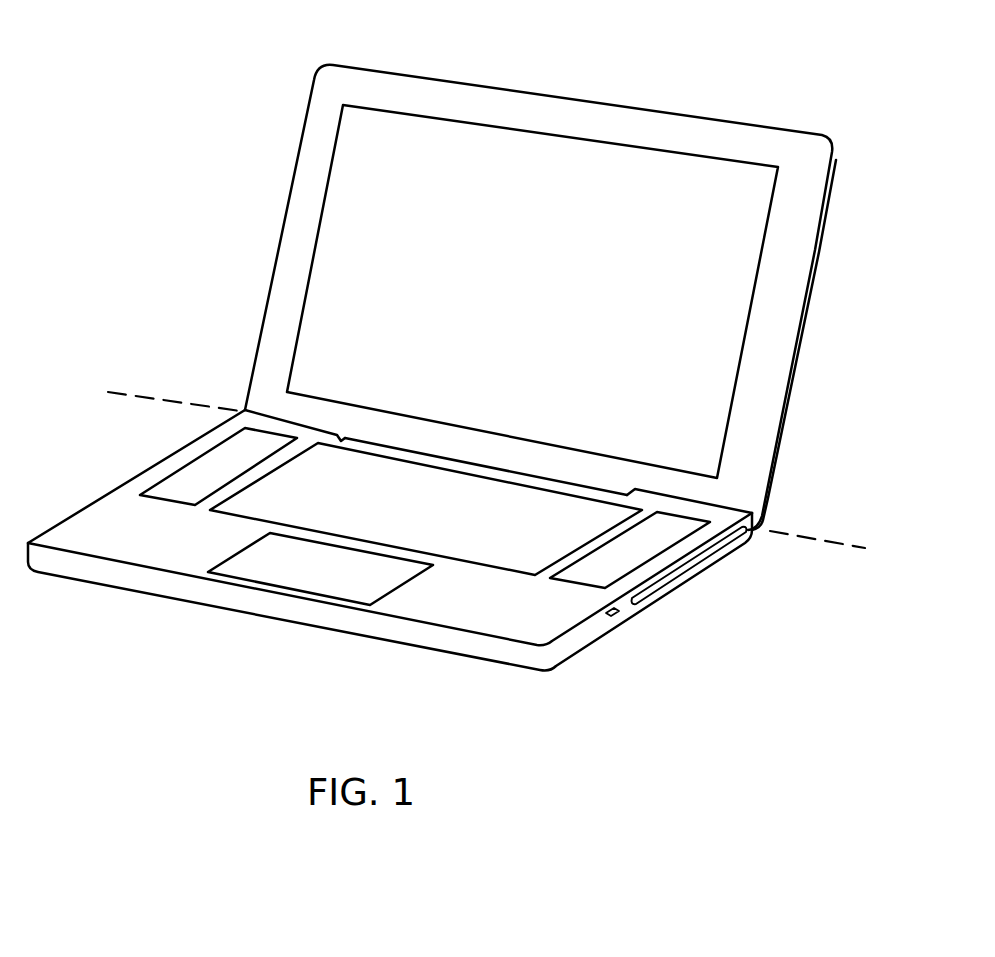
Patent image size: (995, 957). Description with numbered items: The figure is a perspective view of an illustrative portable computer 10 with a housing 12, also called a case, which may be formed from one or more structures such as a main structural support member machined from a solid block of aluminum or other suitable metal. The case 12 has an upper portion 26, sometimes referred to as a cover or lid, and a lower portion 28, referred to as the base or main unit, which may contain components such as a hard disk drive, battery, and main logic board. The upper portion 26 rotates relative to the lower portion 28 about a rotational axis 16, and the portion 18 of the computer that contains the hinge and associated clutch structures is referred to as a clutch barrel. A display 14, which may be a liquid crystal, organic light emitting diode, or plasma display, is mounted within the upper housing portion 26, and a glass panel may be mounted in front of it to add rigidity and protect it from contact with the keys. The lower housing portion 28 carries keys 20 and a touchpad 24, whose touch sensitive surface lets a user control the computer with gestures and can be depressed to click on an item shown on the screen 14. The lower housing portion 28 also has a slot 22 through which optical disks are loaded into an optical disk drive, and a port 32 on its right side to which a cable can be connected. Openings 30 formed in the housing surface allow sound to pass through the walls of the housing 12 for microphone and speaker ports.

The portable computer 10 is at (745, 62).
The housing 12 is at (258, 128).
The display 14 is at (548, 150).
The rotational axis 16 is at (142, 397).
The clutch barrel 18 is at (421, 443).
The keys 20 is at (500, 558).
The slot 22 is at (697, 562).
The touchpad 24 is at (243, 567).
The upper portion 26 is at (757, 438).
The lower portion 28 is at (528, 662).
The openings 30 is at (163, 490).
The port 32 is at (620, 620).